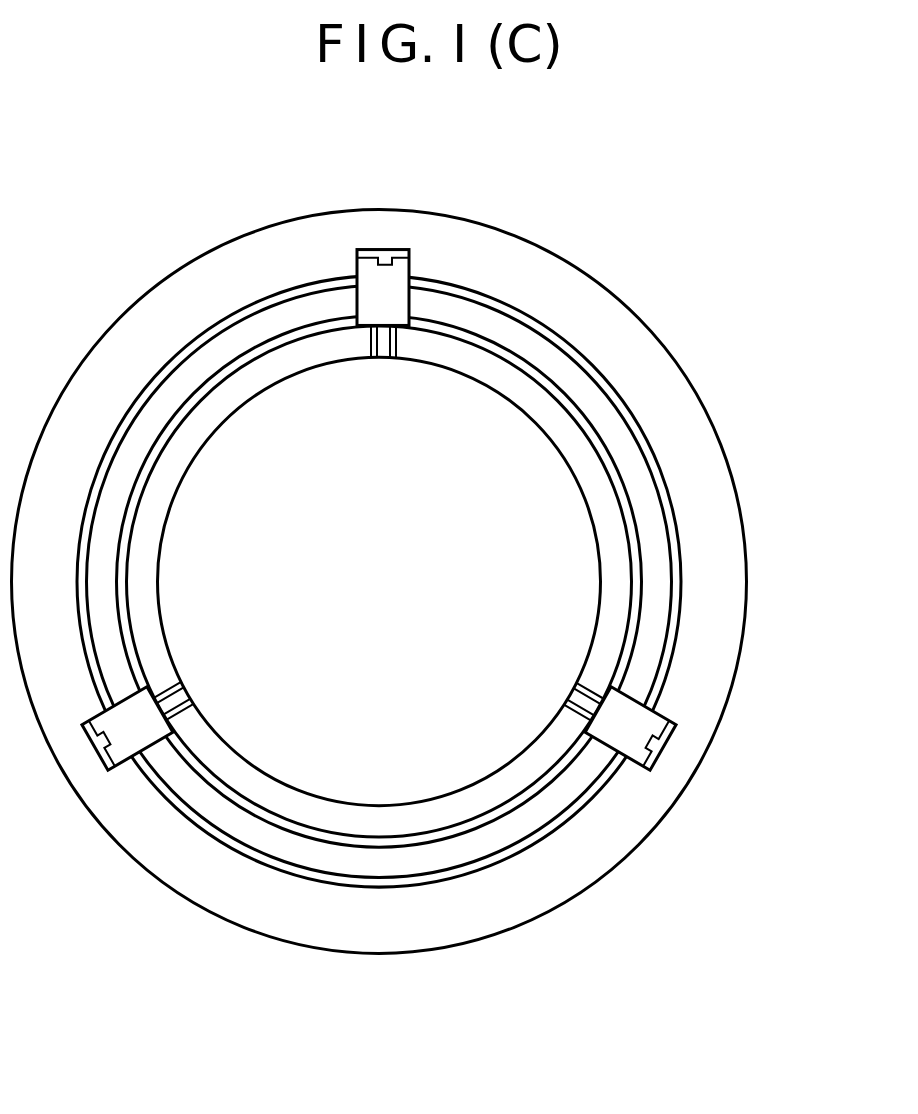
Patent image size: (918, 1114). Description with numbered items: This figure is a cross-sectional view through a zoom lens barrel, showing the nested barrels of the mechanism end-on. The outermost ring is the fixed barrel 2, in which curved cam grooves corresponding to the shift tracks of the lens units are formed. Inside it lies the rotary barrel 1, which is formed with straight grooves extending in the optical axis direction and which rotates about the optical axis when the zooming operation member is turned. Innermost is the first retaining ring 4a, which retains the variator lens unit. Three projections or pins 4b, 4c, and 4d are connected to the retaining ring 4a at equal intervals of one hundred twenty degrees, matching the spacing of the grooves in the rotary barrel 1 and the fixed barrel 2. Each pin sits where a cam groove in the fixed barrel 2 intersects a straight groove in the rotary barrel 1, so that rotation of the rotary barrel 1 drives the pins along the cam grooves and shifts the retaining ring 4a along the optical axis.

The rotary barrel 1 is at (630, 450).
The fixed barrel 2 is at (595, 305).
The first retaining ring 4a is at (437, 813).
The projection or pin 4b is at (398, 270).
The projection or pin 4c is at (660, 720).
The projection or pin 4d is at (123, 747).